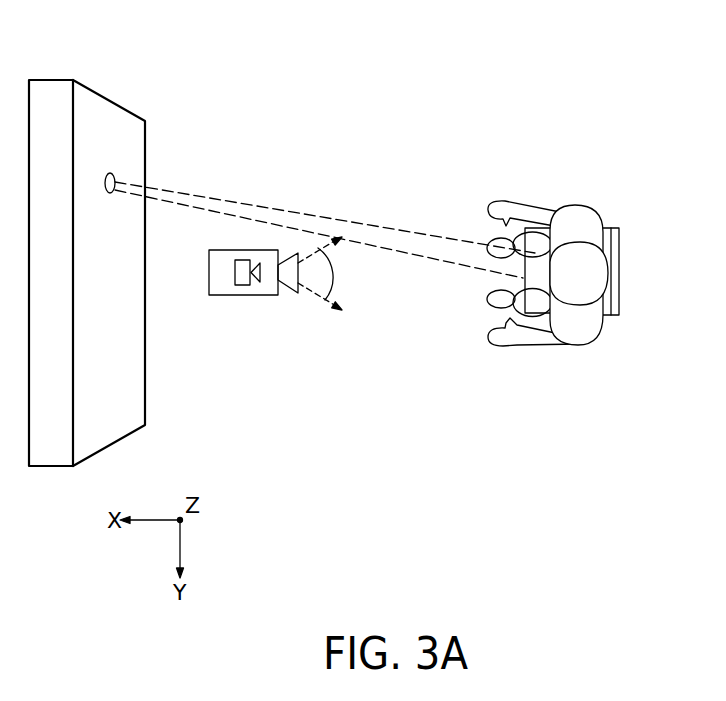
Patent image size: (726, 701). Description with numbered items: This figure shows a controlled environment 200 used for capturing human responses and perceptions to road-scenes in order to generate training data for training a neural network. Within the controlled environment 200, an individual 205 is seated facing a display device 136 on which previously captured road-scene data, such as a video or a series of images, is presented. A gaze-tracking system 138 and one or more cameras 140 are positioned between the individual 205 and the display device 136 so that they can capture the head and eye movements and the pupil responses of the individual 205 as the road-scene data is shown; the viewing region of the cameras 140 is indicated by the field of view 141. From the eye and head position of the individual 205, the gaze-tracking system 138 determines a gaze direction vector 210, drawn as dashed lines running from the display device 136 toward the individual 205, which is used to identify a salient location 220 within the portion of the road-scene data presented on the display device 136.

The display device 136 is at (52, 79).
The salient location 220 is at (108, 172).
The gaze direction vector 210 is at (300, 212).
The cameras 140 is at (215, 296).
The gaze-tracking system 138 is at (242, 286).
The field of view 141 is at (327, 272).
The controlled environment 200 is at (621, 154).
The individual 205 is at (587, 342).